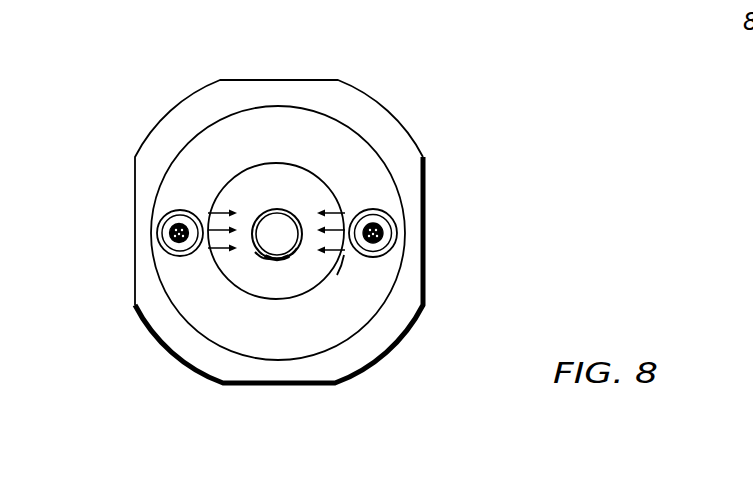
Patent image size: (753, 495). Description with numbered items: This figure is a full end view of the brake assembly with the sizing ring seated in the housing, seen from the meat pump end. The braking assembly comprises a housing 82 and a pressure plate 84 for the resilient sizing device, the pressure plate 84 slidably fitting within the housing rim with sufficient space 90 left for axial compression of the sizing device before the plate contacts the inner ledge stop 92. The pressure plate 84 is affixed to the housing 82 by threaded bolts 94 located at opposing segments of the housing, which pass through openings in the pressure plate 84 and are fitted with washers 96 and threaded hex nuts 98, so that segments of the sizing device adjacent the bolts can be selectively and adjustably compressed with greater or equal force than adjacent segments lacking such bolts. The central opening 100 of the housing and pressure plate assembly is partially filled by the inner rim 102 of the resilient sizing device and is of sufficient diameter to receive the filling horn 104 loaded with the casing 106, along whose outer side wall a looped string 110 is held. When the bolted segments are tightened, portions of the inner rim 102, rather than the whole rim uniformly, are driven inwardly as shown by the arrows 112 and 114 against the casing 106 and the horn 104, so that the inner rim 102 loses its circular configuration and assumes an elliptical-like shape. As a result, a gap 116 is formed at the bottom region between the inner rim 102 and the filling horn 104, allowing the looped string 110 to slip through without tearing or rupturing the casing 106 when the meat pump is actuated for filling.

The housing 82 is at (393, 320).
The pressure plate 84 is at (363, 177).
The central opening 100 is at (321, 193).
The filling horn 104 is at (263, 210).
The casing 106 is at (284, 216).
The threaded bolts 94 is at (177, 233).
The washers 96 is at (396, 218).
The threaded hex nuts 98 is at (373, 235).
The inner rim 102 is at (284, 266).
The looped string 110 is at (268, 266).
The arrows 112 is at (266, 262).
The arrows 114 is at (347, 255).
The gap 116 is at (273, 265).
The inner ledge stop 92 is at (651, 0).
The space 90 is at (700, 0).